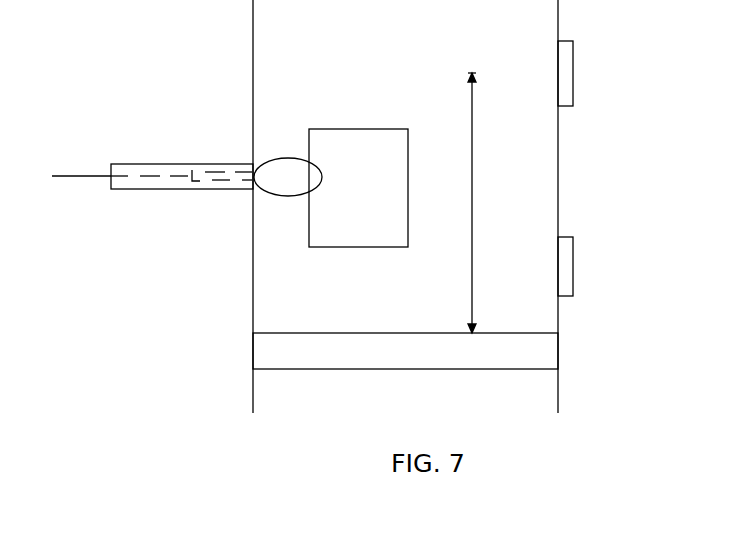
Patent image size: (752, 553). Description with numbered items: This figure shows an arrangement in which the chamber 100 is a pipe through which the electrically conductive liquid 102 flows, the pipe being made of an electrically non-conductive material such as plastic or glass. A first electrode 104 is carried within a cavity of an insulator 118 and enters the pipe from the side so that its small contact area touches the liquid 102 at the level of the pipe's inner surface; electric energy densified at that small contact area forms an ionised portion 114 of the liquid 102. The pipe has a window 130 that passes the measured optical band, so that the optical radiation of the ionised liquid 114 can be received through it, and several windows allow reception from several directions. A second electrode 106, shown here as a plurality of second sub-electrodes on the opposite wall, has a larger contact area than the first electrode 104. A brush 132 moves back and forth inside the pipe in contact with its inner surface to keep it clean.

The chamber 100 is at (252, 20).
The electrically conductive liquid 102 is at (410, 55).
The first electrode 104 is at (233, 172).
The second electrode 106 is at (567, 43).
The ionised portion of the liquid 114 is at (305, 189).
The insulator 118 is at (147, 164).
The window 130 is at (377, 211).
The brush 132 is at (426, 364).